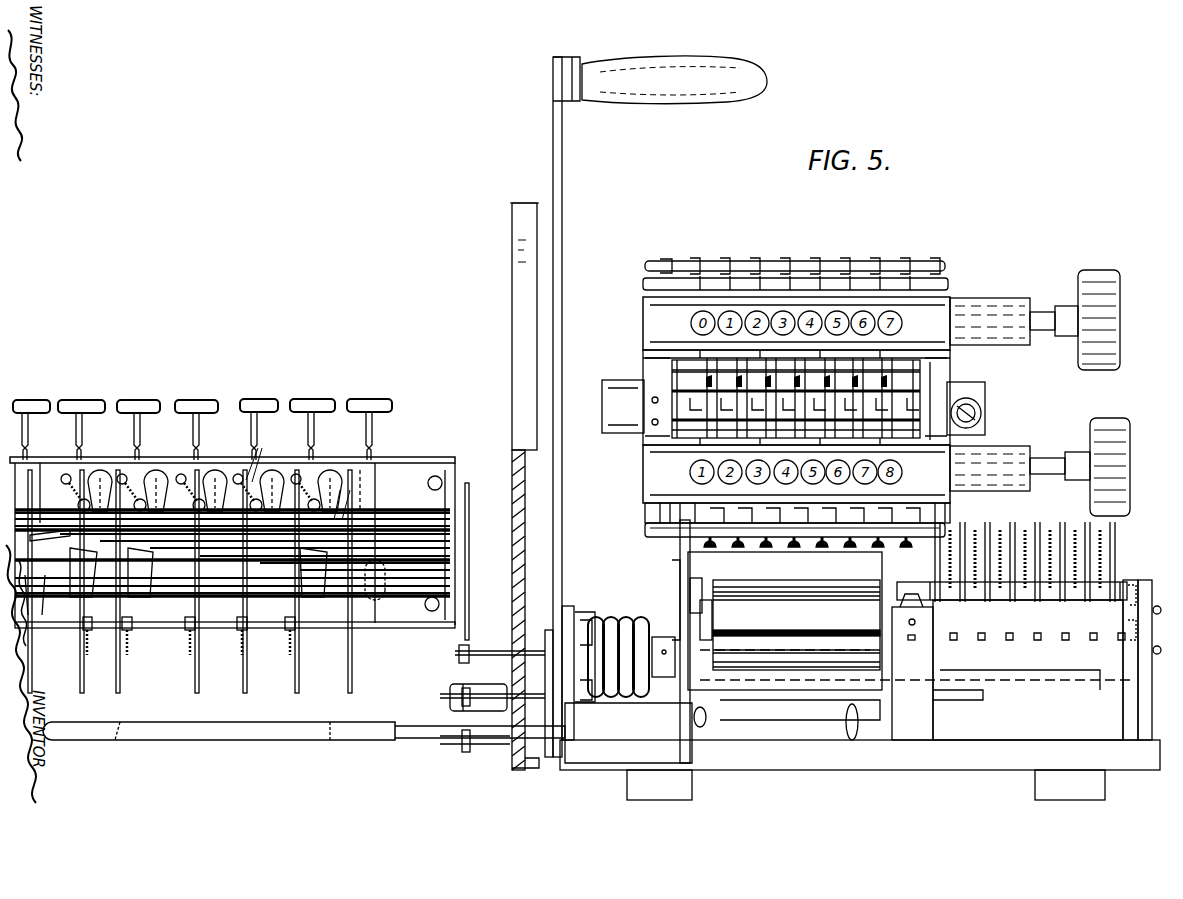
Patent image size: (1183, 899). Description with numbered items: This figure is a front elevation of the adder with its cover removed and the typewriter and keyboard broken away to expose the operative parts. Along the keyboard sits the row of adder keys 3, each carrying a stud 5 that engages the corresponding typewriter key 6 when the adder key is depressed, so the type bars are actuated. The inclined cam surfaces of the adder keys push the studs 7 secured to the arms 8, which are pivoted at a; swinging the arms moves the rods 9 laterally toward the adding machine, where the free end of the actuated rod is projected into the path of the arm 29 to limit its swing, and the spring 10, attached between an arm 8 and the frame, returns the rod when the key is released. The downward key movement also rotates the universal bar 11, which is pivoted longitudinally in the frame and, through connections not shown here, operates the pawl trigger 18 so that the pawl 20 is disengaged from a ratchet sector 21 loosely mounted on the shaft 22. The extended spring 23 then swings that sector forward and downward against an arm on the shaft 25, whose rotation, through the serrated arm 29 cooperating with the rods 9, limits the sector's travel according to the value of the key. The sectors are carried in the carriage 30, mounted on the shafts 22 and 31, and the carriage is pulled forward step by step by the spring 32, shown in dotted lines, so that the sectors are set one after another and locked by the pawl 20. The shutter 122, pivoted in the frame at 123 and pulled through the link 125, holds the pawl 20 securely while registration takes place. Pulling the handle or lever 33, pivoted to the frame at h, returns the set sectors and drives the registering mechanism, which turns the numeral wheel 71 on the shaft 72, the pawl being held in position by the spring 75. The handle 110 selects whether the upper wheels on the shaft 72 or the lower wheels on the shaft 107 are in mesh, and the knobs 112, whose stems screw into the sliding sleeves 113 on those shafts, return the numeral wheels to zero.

The adder keys 3 is at (200, 402).
The spring 10 is at (72, 475).
The studs 7 is at (261, 484).
The pivot a is at (314, 474).
The rods 9 is at (347, 495).
The arms 8 is at (196, 588).
The studs 5 is at (185, 626).
The typewriter keys 6 is at (188, 650).
The universal bar 11 is at (247, 736).
The arm 29 is at (471, 535).
The shaft 25 is at (482, 652).
The handle or lever 33 is at (563, 222).
The numeral wheel 71 is at (715, 269).
The spring 75 is at (895, 269).
The sleeves 113 is at (979, 304).
The shaft 72 is at (1044, 313).
The shaft 107 is at (1045, 460).
The knobs 112 is at (1100, 370).
The handle 110 is at (983, 414).
The ratchet sector 21 is at (1028, 522).
The spring 23 is at (1057, 522).
The pawl 20 is at (1113, 558).
The pawl trigger 18 is at (892, 605).
The carriage 30 is at (1047, 670).
The shaft 31 is at (1128, 665).
The shaft or rod 22 is at (1133, 587).
The pivot h is at (631, 659).
The link 125 is at (680, 548).
The shutter 122 is at (694, 573).
The spring 32 is at (745, 638).
The pivot 123 is at (702, 725).